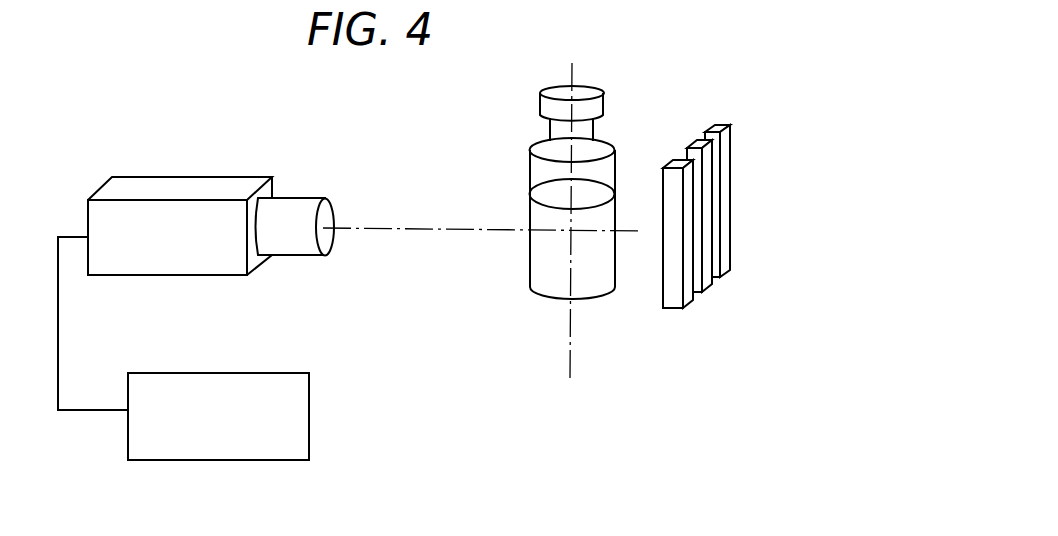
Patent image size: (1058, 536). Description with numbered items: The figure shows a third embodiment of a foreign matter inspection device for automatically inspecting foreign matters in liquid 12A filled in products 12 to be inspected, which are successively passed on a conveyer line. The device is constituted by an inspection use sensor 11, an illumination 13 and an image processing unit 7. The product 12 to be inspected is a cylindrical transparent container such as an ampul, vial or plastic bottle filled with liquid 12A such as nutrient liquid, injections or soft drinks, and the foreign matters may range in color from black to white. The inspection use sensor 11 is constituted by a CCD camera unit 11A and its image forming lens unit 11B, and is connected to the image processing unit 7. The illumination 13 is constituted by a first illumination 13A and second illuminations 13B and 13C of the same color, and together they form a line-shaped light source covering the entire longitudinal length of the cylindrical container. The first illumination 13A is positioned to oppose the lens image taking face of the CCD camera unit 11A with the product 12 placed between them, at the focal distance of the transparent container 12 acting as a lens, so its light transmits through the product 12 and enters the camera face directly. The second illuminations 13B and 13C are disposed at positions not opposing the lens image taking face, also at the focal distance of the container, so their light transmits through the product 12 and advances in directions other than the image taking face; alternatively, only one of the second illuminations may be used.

The image processing unit 7 is at (208, 452).
The inspection use sensor 11 is at (219, 220).
The CCD camera unit 11A is at (197, 263).
The image forming lens unit 11B is at (295, 246).
The product to be inspected 12 is at (582, 194).
The liquid 12A is at (533, 272).
The illumination 13 is at (719, 250).
The first illumination 13A is at (695, 296).
The second illumination 13B is at (663, 308).
The second illumination 13C is at (723, 282).